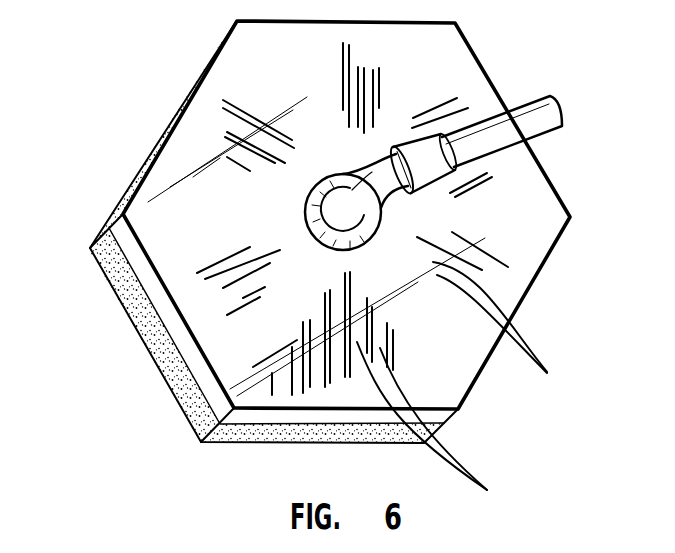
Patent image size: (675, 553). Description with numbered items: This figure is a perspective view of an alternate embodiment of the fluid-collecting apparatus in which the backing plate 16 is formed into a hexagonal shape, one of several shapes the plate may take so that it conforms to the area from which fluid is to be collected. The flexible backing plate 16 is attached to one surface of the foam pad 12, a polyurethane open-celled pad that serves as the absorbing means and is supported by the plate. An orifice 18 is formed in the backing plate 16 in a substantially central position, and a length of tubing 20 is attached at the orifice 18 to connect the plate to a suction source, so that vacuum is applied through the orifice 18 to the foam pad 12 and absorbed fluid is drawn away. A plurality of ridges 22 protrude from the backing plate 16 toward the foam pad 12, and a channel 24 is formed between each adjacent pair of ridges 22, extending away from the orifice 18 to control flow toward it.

The foam pad 12 is at (172, 362).
The backing plate 16 is at (523, 262).
The orifice 18 is at (305, 211).
The tubing 20 is at (522, 118).
The ridges 22 is at (512, 324).
The channel 24 is at (437, 424).